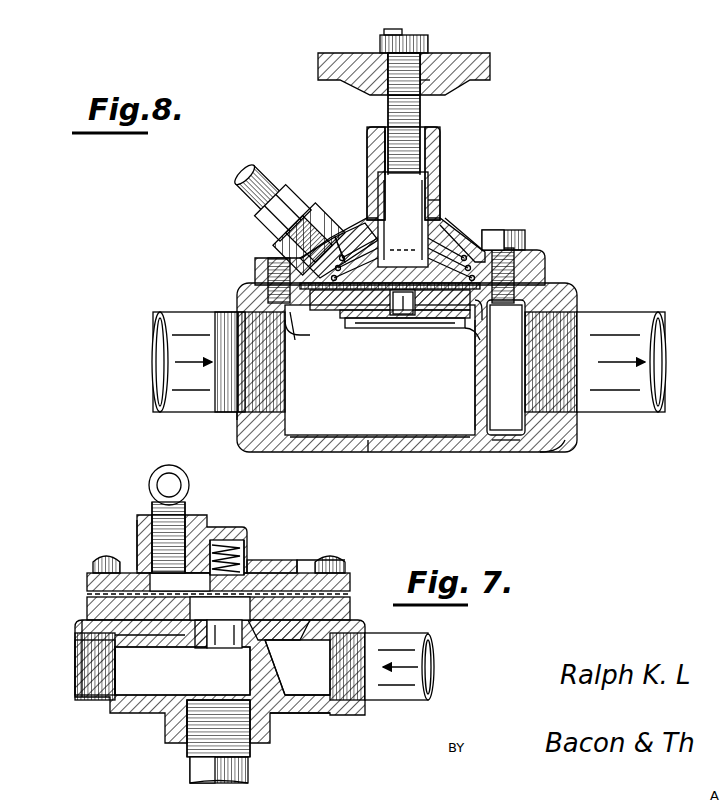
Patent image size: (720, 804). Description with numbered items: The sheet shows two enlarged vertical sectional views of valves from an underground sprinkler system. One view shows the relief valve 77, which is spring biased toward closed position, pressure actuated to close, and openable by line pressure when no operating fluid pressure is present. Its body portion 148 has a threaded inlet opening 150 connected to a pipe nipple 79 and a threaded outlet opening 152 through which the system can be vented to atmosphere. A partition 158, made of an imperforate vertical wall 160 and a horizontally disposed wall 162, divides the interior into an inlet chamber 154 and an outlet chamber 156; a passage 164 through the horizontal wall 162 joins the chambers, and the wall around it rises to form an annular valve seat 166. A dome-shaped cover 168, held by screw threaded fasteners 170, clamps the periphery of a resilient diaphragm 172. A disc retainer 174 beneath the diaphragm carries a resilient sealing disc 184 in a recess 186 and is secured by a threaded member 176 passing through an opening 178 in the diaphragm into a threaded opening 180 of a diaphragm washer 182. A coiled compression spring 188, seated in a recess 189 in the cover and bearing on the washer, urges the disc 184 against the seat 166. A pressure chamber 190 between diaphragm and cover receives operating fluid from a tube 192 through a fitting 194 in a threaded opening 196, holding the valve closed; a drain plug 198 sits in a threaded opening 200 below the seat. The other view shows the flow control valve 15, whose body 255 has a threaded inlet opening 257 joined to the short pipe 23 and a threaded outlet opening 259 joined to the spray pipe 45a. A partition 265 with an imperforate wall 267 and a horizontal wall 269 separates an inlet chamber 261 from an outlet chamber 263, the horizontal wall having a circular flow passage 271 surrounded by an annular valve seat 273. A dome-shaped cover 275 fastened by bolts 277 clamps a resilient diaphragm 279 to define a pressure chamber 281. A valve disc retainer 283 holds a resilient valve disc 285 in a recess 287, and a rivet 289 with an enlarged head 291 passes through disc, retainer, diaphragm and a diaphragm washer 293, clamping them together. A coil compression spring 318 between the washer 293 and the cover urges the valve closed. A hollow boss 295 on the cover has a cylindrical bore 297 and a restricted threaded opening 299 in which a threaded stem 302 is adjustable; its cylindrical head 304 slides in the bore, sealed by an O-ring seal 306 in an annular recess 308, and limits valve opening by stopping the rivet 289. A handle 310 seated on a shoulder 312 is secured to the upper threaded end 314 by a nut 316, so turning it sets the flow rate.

In FIG. 8, the flow control valve 15 is at (430, 445).
In FIG. 8, the short pipe 23 is at (168, 312).
In FIG. 8, the spray pipe 45a is at (640, 312).
In FIG. 8, the valve body 255 is at (383, 442).
In FIG. 8, the threaded inlet opening 257 is at (238, 415).
In FIG. 8, the threaded outlet opening 259 is at (560, 444).
In FIG. 8, the inlet chamber 261 is at (343, 438).
In FIG. 8, the outlet chamber 263 is at (510, 440).
In FIG. 8, the partition 265 is at (472, 418).
In FIG. 8, the imperforate wall 267 is at (506, 405).
In FIG. 8, the horizontal wall 269 is at (303, 345).
In FIG. 8, the flow passage 271 is at (360, 292).
In FIG. 8, the valve seat 273 is at (436, 330).
In FIG. 8, the cover 275 is at (440, 228).
In FIG. 8, the bolts 277 is at (282, 258).
In FIG. 8, the diaphragm 279 is at (262, 278).
In FIG. 8, the pressure chamber 281 is at (522, 244).
In FIG. 8, the valve disc retainer 283 is at (470, 300).
In FIG. 8, the valve disc 285 is at (423, 320).
In FIG. 8, the recess 287 is at (478, 338).
In FIG. 8, the rivet 289 is at (400, 312).
In FIG. 8, the rivet head 291 is at (393, 350).
In FIG. 8, the diaphragm washer 293 is at (298, 338).
In FIG. 8, the hollow boss 295 is at (440, 150).
In FIG. 8, the cylindrical bore 297 is at (442, 205).
In FIG. 8, the threaded opening 299 is at (386, 140).
In FIG. 8, the threaded stem 302 is at (385, 105).
In FIG. 8, the cylindrical head 304 is at (403, 219).
In FIG. 8, the O-ring seal 306 is at (378, 185).
In FIG. 8, the annular recess 308 is at (372, 200).
In FIG. 8, the handle 310 is at (325, 53).
In FIG. 8, the shoulder 312 is at (428, 83).
In FIG. 8, the upper threaded end 314 is at (408, 60).
In FIG. 8, the nut 316 is at (382, 42).
In FIG. 8, the compression spring 318 is at (452, 230).
In FIG. 7, the relief valve 77 is at (82, 722).
In FIG. 7, the pipe nipple 79 is at (415, 645).
In FIG. 7, the body portion 148 is at (158, 708).
In FIG. 7, the threaded inlet opening 150 is at (348, 700).
In FIG. 7, the threaded outlet opening 152 is at (76, 640).
In FIG. 7, the inlet chamber 154 is at (288, 700).
In FIG. 7, the outlet chamber 156 is at (135, 690).
In FIG. 7, the partition 158 is at (275, 668).
In FIG. 7, the vertical wall 160 is at (276, 688).
In FIG. 7, the horizontal wall 162 is at (140, 630).
In FIG. 7, the passage 164 is at (182, 671).
In FIG. 7, the valve seat 166 is at (262, 618).
In FIG. 7, the cover 168 is at (290, 560).
In FIG. 7, the screw threaded fasteners 170 is at (102, 562).
In FIG. 7, the diaphragm 172 is at (90, 580).
In FIG. 7, the disc retainer 174 is at (218, 608).
In FIG. 7, the threaded member 176 is at (258, 590).
In FIG. 7, the opening 178 is at (180, 576).
In FIG. 7, the threaded opening 180 is at (240, 545).
In FIG. 7, the diaphragm washer 182 is at (140, 562).
In FIG. 7, the sealing disc 184 is at (222, 640).
In FIG. 7, the recess 186 is at (197, 640).
In FIG. 7, the compression spring 188 is at (244, 540).
In FIG. 7, the recess 189 is at (210, 540).
In FIG. 7, the pressure chamber 190 is at (315, 565).
In FIG. 7, the tube 192 is at (162, 467).
In FIG. 7, the fitting 194 is at (150, 512).
In FIG. 7, the threaded opening 196 is at (137, 528).
In FIG. 7, the drain plug 198 is at (250, 773).
In FIG. 7, the threaded opening 200 is at (250, 735).